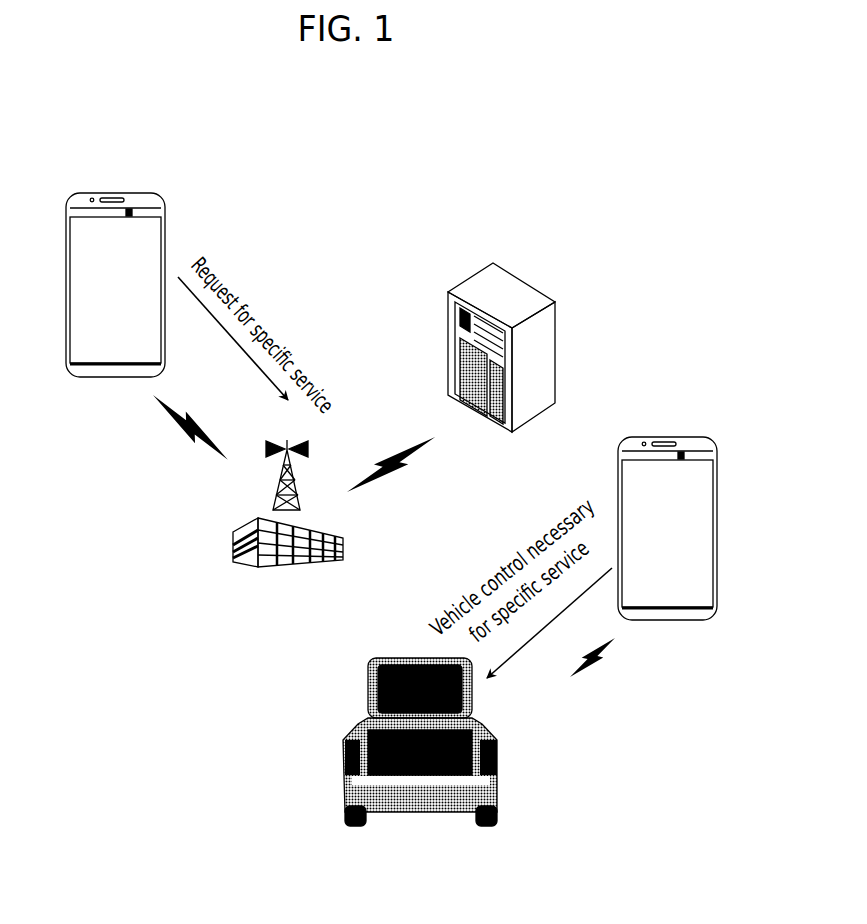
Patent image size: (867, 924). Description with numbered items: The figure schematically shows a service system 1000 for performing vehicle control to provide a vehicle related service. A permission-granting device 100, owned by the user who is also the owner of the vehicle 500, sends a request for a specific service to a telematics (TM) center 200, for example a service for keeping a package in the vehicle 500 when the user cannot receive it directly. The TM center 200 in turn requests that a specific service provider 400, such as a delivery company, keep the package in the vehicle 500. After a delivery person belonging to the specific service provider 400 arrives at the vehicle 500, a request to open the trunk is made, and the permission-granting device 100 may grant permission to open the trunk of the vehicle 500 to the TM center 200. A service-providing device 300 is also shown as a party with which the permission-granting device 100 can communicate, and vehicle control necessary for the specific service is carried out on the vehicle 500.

The permission-granting device 100 is at (75, 377).
The telematics (TM) center 200 is at (253, 563).
The service-providing device 300 is at (695, 619).
The specific service provider 400 is at (507, 433).
The vehicle 500 is at (343, 775).
The service system 1000 is at (144, 640).